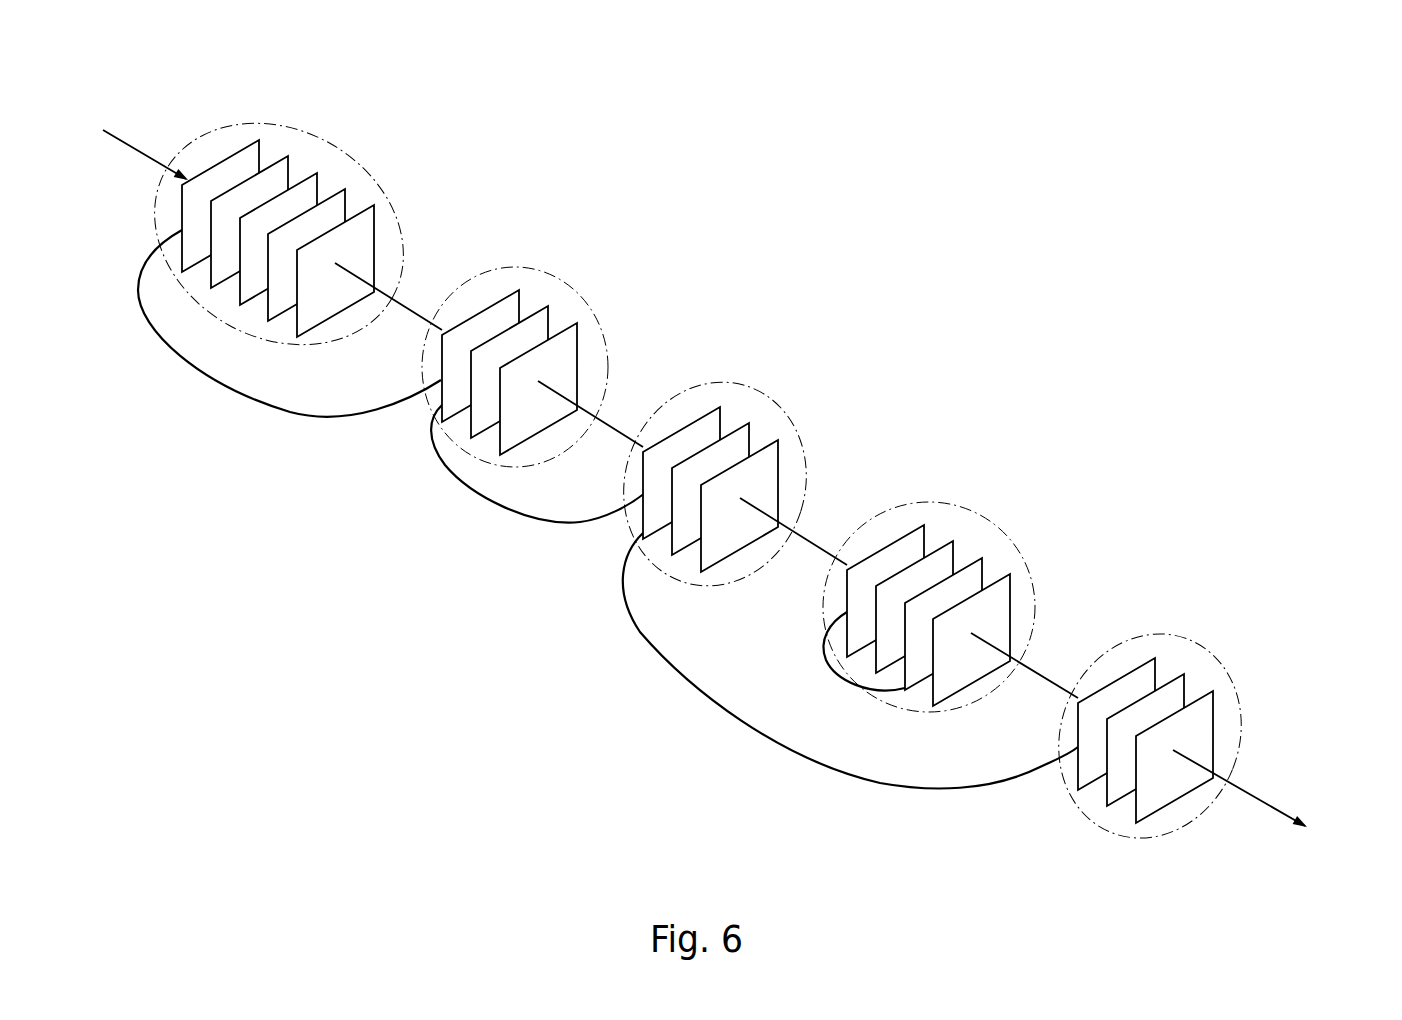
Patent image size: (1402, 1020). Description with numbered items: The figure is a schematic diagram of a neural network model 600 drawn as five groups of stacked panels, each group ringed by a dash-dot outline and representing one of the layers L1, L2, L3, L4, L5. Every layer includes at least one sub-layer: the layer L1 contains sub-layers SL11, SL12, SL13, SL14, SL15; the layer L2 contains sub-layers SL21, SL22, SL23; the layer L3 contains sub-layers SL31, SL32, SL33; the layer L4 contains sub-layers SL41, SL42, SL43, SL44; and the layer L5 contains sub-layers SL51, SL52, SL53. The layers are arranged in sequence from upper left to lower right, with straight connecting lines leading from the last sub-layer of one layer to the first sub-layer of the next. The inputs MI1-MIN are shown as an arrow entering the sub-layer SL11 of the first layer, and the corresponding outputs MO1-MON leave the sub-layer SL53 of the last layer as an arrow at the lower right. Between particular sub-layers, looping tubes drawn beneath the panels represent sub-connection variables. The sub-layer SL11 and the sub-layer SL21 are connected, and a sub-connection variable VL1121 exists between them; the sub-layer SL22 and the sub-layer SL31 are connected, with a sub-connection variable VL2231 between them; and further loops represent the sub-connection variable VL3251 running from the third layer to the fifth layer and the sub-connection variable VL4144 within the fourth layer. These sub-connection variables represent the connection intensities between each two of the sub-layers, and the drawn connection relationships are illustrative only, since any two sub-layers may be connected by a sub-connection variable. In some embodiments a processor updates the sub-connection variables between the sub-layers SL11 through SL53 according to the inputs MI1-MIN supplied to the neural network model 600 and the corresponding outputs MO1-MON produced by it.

The neural network model 600 is at (1030, 175).
The layer L1 is at (405, 238).
The layer L2 is at (607, 358).
The layer L3 is at (809, 476).
The layer L4 is at (1036, 610).
The layer L5 is at (1243, 711).
The sub-layer SL11 is at (259, 149).
The sub-layer SL12 is at (288, 165).
The sub-layer SL13 is at (317, 182).
The sub-layer SL14 is at (345, 198).
The sub-layer SL15 is at (374, 214).
The sub-layer SL21 is at (519, 299).
The sub-layer SL22 is at (548, 315).
The sub-layer SL23 is at (577, 332).
The sub-layer SL31 is at (720, 416).
The sub-layer SL32 is at (749, 432).
The sub-layer SL33 is at (778, 449).
The sub-layer SL41 is at (924, 534).
The sub-layer SL42 is at (953, 550).
The sub-layer SL43 is at (982, 567).
The sub-layer SL44 is at (1010, 583).
The sub-layer SL51 is at (1155, 667).
The sub-layer SL52 is at (1184, 683).
The sub-layer SL53 is at (1213, 700).
The sub-connection variable VL1121 is at (205, 368).
The sub-connection variable VL2231 is at (488, 499).
The sub-connection variable VL3251 is at (743, 720).
The sub-connection variable VL4144 is at (820, 652).
The inputs MI1-MIN is at (137, 148).
The outputs MO1-MON is at (1308, 767).